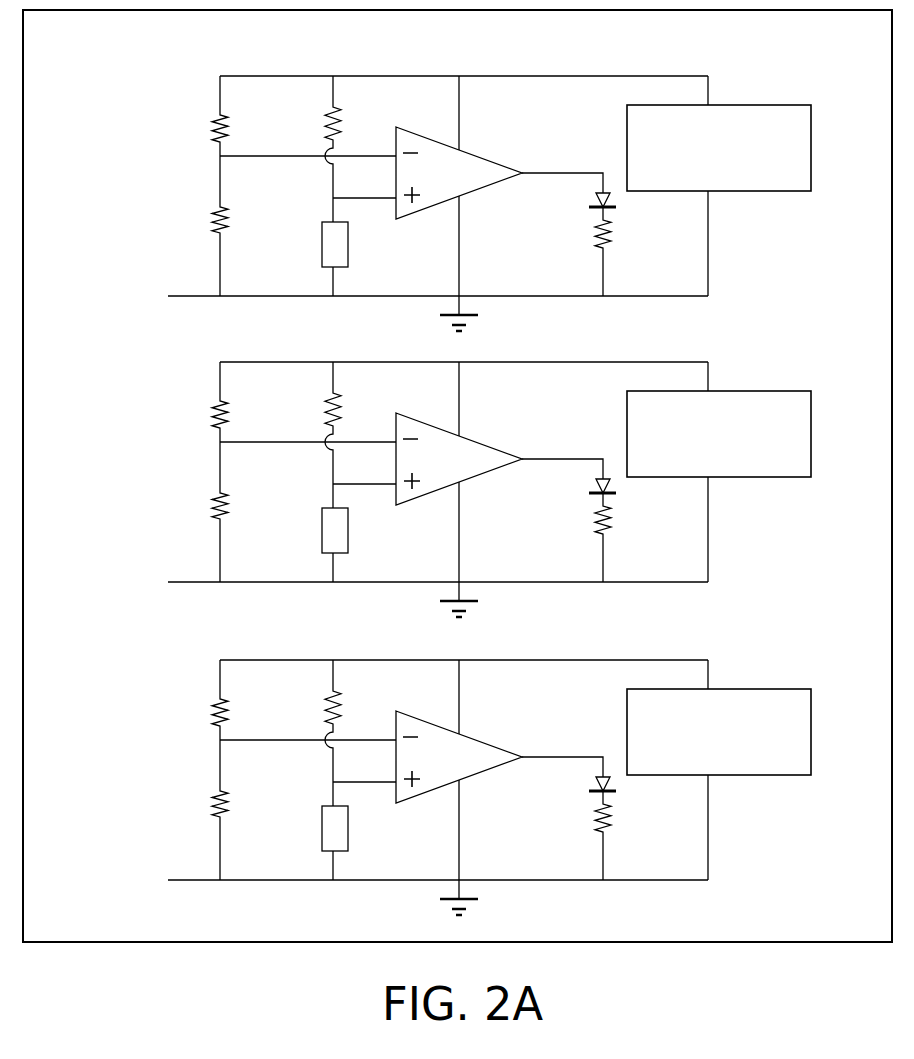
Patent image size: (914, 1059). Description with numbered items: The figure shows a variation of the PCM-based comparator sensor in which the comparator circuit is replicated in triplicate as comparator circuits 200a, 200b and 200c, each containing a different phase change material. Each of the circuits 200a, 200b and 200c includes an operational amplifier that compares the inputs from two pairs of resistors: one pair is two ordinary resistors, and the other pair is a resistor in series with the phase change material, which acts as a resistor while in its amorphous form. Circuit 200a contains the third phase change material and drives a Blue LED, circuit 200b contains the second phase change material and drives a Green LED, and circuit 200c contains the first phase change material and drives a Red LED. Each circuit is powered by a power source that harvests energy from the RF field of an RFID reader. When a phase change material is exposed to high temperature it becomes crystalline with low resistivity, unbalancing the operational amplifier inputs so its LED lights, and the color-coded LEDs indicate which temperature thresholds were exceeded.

The comparator circuit 200a is at (431, 203).
The comparator circuit 200b is at (431, 489).
The comparator circuit 200c is at (431, 787).